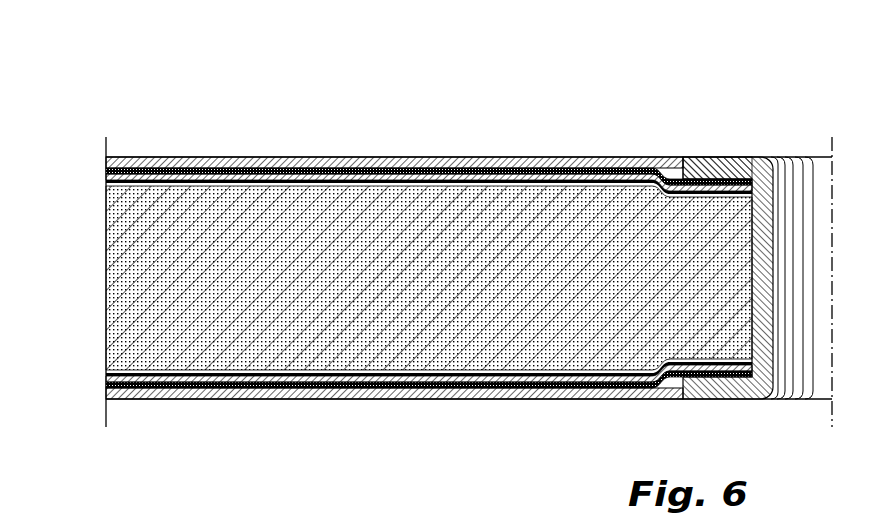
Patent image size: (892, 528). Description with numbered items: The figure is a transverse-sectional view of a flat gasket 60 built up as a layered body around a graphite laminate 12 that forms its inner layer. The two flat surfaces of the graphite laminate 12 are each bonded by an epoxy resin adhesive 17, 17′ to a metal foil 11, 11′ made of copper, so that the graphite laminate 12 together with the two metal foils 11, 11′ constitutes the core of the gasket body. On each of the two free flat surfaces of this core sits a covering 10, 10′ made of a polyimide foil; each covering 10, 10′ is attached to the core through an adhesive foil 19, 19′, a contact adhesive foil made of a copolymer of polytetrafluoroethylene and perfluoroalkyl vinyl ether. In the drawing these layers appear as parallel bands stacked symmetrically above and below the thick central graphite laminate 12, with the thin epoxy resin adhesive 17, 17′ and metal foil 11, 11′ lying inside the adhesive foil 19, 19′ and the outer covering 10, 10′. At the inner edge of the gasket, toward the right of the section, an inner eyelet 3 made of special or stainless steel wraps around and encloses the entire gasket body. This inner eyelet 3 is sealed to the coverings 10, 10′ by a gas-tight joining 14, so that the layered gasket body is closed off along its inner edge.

The flat gasket 60 is at (303, 133).
The graphite laminate 12 is at (108, 288).
The covering 10 is at (410, 156).
The adhesive foil 19 is at (462, 156).
The metal foil 11 is at (515, 156).
The epoxy resin adhesive 17 is at (572, 156).
The covering 10′ is at (389, 400).
The adhesive foil 19′ is at (462, 400).
The metal foil 11′ is at (522, 400).
The epoxy resin adhesive 17′ is at (573, 400).
The inner eyelet 3 is at (741, 168).
The gas-tight joining 14 is at (703, 168).